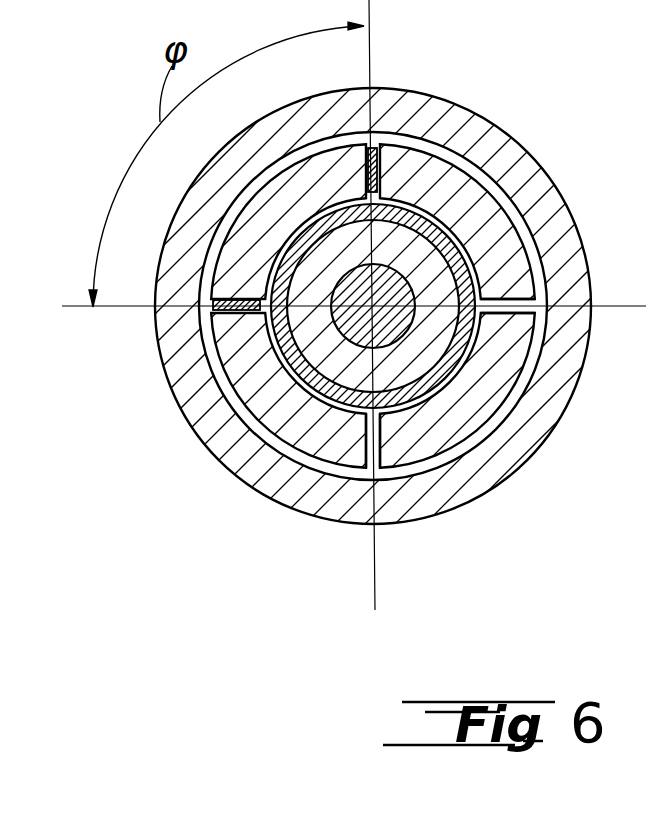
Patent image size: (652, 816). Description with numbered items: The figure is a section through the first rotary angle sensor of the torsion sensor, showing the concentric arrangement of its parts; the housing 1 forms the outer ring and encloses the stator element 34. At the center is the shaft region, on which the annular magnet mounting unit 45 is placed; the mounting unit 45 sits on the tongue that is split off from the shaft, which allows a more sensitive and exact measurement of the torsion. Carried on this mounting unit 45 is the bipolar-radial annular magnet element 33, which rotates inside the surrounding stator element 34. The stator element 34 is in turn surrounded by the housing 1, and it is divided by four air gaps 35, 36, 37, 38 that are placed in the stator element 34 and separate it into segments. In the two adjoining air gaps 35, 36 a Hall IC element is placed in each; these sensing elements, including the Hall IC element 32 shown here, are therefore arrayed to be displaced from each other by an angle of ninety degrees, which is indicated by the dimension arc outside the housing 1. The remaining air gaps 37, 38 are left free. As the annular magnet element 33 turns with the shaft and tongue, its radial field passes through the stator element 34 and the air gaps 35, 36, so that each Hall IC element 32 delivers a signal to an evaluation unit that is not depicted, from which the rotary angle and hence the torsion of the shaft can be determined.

The housing 1 is at (200, 248).
The Hall IC element 32 is at (362, 177).
The bipolar-radial annular magnet element 33 is at (447, 240).
The stator element 34 is at (290, 425).
The air gap 35 is at (207, 310).
The air gap 36 is at (379, 147).
The air gap 37 is at (540, 310).
The air gap 38 is at (375, 467).
The annular magnet mounting unit 45 is at (440, 262).